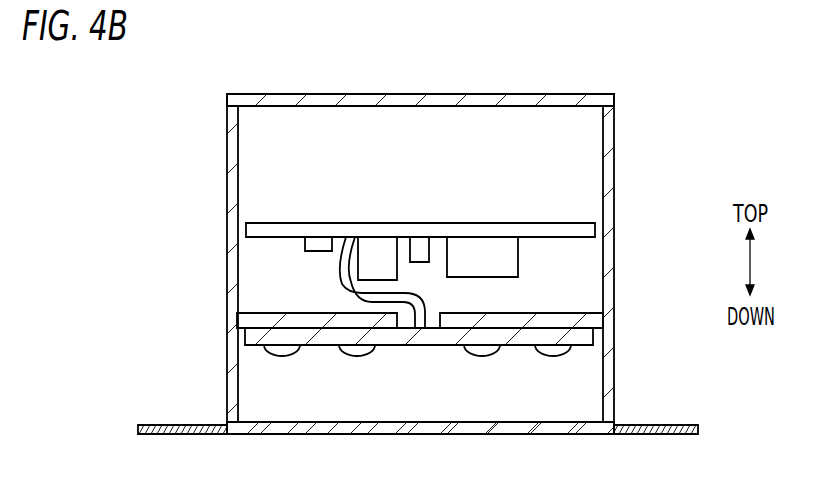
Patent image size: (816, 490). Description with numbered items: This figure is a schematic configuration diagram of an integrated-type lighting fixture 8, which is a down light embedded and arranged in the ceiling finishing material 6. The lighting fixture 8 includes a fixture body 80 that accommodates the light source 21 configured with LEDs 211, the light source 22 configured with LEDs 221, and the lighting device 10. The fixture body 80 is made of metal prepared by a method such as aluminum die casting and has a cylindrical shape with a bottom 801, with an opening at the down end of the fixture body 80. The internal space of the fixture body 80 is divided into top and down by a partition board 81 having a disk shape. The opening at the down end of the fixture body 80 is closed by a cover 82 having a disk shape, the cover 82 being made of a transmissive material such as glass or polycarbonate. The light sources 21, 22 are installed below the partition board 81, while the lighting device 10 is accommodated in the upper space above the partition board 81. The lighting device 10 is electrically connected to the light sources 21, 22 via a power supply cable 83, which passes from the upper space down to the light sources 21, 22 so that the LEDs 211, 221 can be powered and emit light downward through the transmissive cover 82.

The fixture body 80 is at (212, 138).
The lighting fixture 8 is at (490, 99).
The bottom 801 is at (405, 94).
The cover 82 is at (450, 434).
The ceiling finishing material 6 is at (658, 434).
The lighting device 10 is at (580, 202).
The power supply cable 83 is at (336, 271).
The partition board 81 is at (548, 318).
The LEDs 211 is at (340, 355).
The light source 21 is at (319, 375).
The LEDs 221 is at (538, 355).
The light source 22 is at (519, 377).